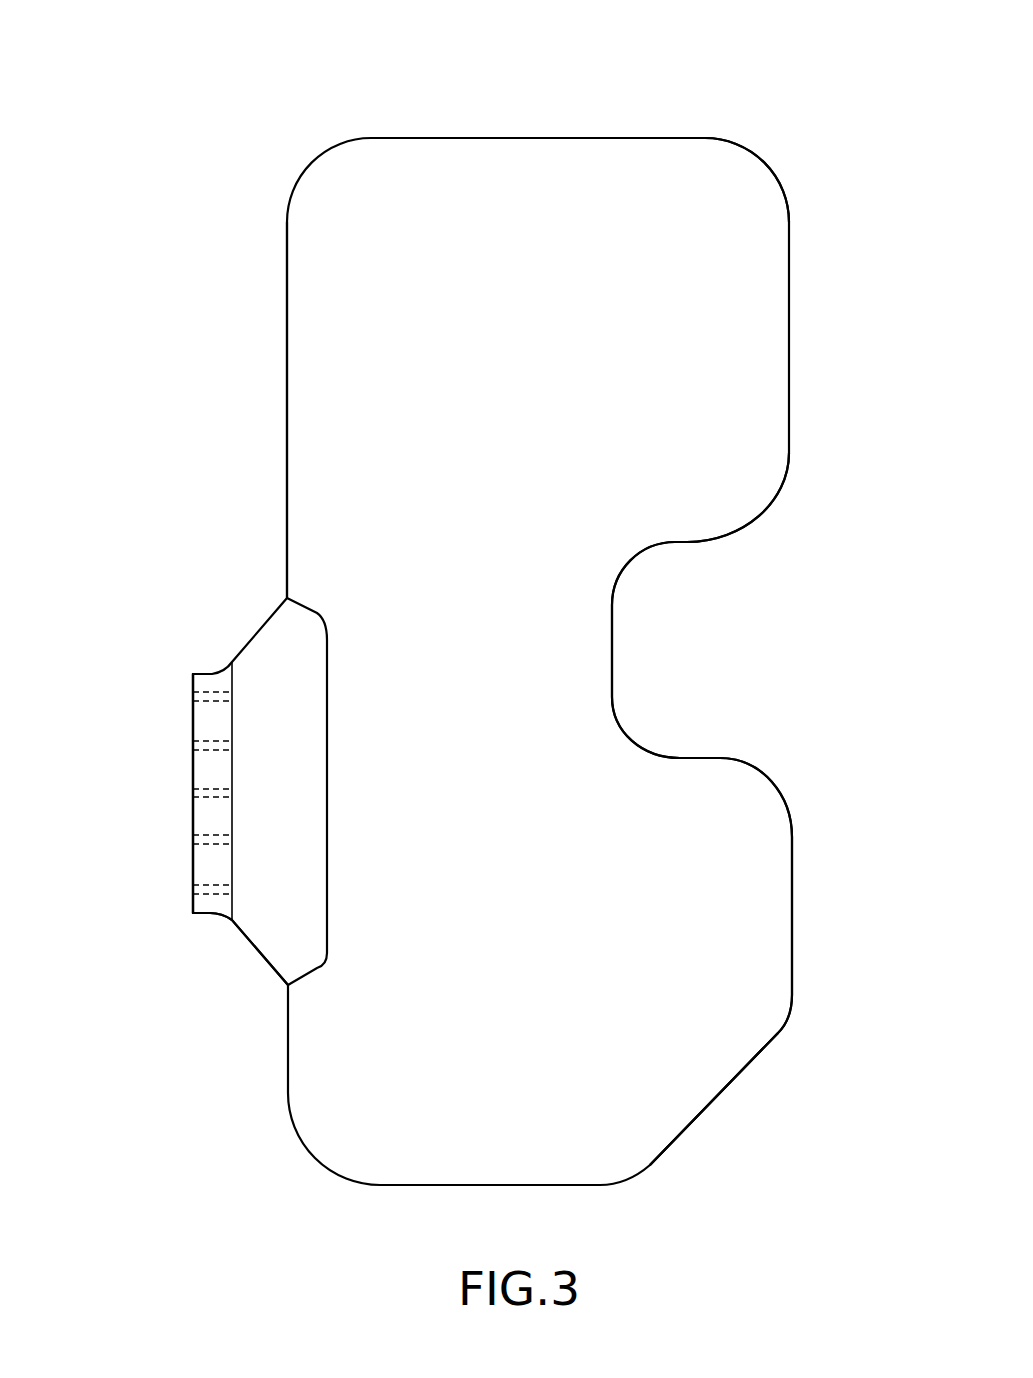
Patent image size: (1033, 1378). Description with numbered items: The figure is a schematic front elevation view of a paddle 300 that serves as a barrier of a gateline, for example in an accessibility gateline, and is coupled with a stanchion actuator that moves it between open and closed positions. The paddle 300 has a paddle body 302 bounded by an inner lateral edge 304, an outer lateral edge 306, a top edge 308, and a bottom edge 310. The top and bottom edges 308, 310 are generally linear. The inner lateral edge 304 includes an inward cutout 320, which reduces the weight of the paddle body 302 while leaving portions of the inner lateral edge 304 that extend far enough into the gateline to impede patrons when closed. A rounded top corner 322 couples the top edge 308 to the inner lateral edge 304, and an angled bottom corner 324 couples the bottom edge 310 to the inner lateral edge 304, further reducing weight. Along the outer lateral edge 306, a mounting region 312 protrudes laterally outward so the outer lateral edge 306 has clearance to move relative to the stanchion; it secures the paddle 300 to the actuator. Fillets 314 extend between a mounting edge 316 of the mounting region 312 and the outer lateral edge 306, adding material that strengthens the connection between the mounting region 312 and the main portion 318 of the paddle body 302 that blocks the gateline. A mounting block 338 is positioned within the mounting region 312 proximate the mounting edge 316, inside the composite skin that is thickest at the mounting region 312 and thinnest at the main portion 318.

The paddle 300 is at (136, 140).
The paddle body 302 is at (693, 1057).
The inner lateral edge 304 is at (803, 885).
The outer lateral edge 306 is at (280, 418).
The top edge 308 is at (484, 121).
The bottom edge 310 is at (455, 1208).
The mounting region 312 is at (176, 717).
The fillets 314 is at (192, 828).
The mounting edge 316 is at (245, 942).
The main portion 318 is at (414, 188).
The inward cutout 320 is at (689, 641).
The top corner 322 is at (781, 150).
The bottom corner 324 is at (740, 1104).
The mounting block 338 is at (213, 863).